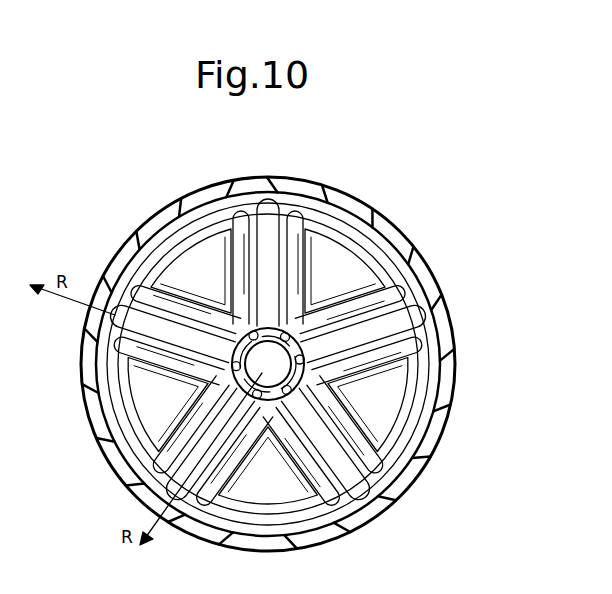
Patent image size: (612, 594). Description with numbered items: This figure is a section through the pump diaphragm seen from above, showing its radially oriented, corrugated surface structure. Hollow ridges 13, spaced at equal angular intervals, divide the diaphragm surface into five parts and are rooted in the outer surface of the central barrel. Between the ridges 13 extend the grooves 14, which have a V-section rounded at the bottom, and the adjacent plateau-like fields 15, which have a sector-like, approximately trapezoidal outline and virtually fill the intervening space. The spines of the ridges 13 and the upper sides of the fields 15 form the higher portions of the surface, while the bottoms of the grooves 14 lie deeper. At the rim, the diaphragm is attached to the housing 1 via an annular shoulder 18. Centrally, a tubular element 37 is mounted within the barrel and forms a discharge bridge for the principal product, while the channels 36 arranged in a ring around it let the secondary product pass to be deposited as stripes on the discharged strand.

The housing 1 is at (438, 443).
The hollow ridges 13 is at (385, 325).
The grooves 14 is at (383, 290).
The fields 15 is at (345, 250).
The annular shoulder 18 is at (428, 392).
The channels 36 is at (237, 325).
The tubular element 37 is at (296, 374).